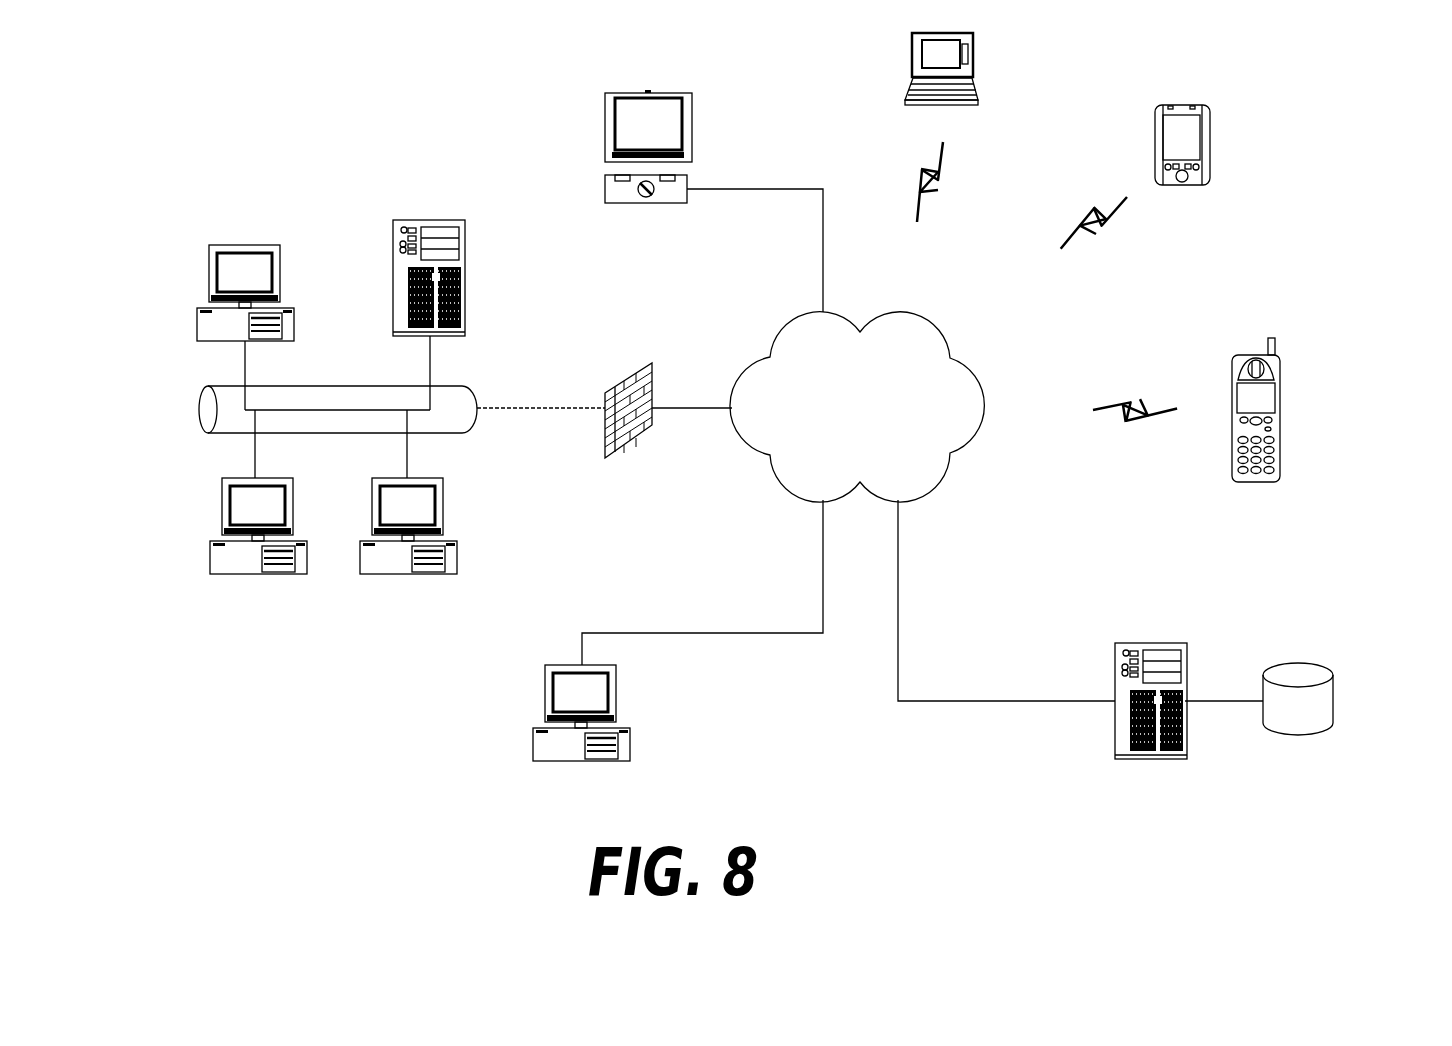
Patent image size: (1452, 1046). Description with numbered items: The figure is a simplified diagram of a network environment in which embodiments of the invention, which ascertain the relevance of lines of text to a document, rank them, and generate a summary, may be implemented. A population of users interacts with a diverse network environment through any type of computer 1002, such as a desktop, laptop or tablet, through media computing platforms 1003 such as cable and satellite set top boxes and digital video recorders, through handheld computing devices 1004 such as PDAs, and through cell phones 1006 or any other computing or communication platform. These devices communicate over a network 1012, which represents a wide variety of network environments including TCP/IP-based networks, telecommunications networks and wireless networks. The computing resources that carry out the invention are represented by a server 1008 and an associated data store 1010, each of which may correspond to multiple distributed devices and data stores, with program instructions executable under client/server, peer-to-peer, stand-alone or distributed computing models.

The computer 1002 is at (209, 275).
The media computing platform 1003 is at (605, 180).
The handheld computing device 1004 is at (1155, 114).
The cell phone 1006 is at (1242, 360).
The server 1008 is at (1115, 652).
The data store 1010 is at (1334, 688).
The network 1012 is at (795, 310).